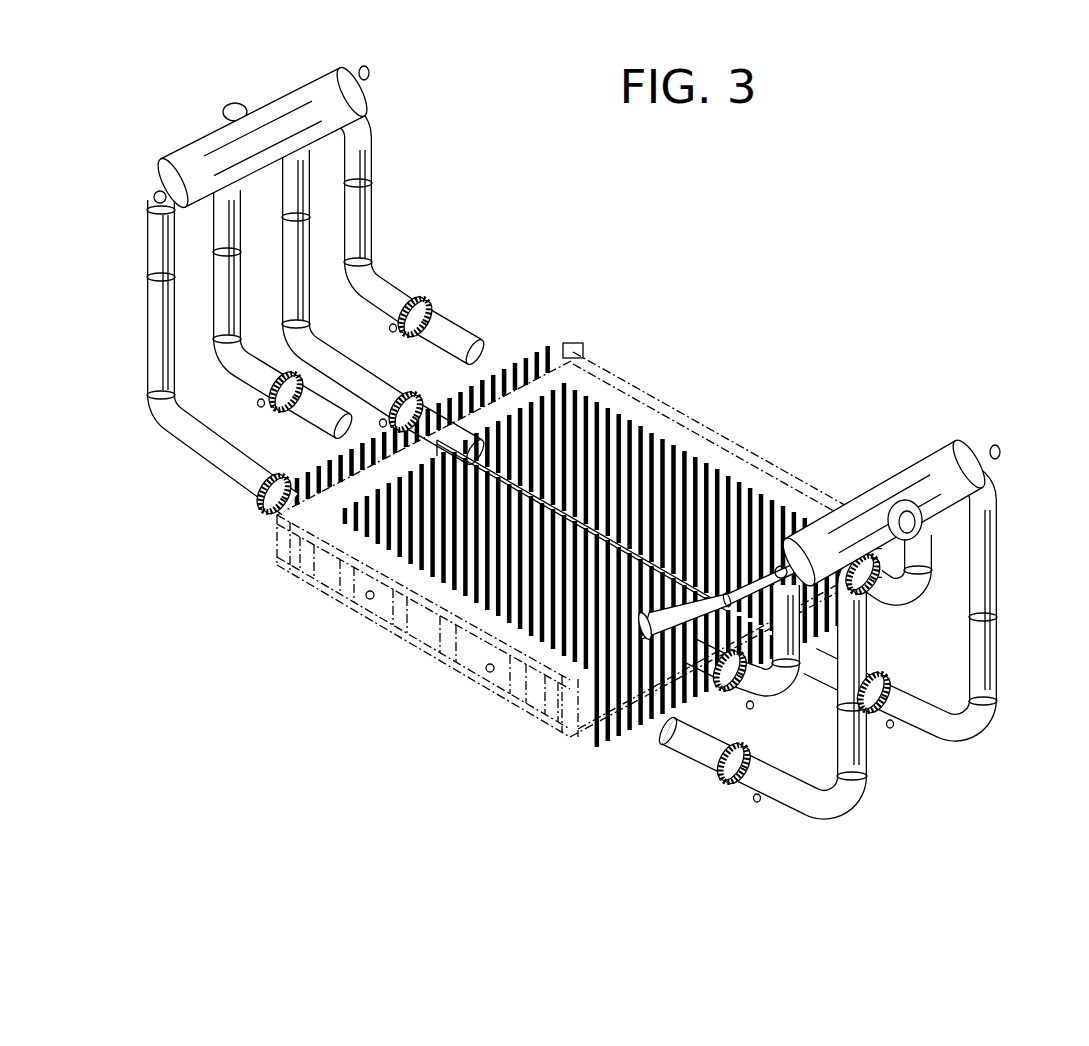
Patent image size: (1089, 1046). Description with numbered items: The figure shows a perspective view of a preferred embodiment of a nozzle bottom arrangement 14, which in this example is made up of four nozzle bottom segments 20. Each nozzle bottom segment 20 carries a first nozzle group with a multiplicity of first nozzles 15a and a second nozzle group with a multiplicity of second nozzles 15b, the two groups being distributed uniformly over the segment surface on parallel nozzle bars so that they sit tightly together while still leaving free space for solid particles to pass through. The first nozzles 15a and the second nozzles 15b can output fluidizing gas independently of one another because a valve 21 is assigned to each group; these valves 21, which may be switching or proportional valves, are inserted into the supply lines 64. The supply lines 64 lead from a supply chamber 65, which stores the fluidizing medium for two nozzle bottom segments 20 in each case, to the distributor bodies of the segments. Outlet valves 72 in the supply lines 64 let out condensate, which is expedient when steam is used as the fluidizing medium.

The nozzle bottom arrangement 14 is at (827, 233).
The first nozzles 15a is at (665, 436).
The second nozzles 15b is at (710, 468).
The nozzle bottom segment 20 is at (257, 591).
The valve 21 is at (433, 290).
The supply line 64 is at (372, 178).
The supply chamber 65 is at (305, 105).
The outlet valve 72 is at (256, 500).